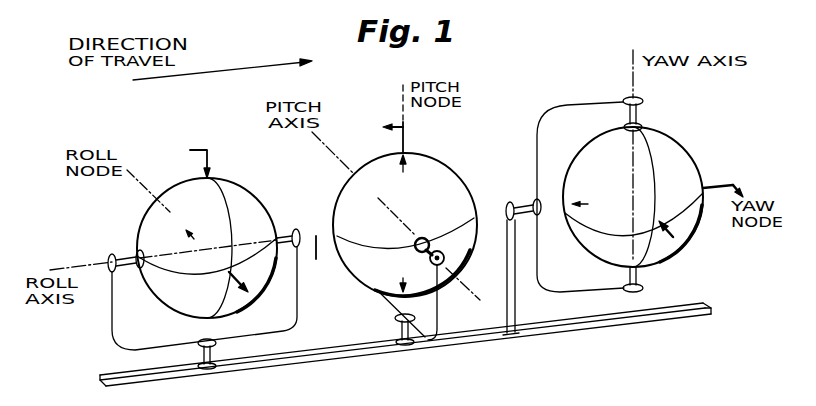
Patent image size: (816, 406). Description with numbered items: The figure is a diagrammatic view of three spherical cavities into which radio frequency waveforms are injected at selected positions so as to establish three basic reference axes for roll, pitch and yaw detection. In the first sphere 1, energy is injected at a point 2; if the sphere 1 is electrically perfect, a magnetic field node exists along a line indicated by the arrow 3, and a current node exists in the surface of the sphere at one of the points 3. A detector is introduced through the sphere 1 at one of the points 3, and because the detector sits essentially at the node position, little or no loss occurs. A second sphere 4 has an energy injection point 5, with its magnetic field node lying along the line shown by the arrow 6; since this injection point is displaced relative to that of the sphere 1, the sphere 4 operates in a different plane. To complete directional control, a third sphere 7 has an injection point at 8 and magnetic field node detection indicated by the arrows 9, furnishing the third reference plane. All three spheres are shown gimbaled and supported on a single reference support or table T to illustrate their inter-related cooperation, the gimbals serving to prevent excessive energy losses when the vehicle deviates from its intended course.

The sphere 1 is at (450, 177).
The injection point 2 is at (331, 233).
The node points 3 is at (403, 288).
The sphere 4 is at (251, 199).
The energy injection point 5 is at (206, 160).
The arrow 6 is at (228, 271).
The sphere 7 is at (671, 138).
The injection point 8 is at (676, 237).
The arrows 9 is at (698, 189).
The reference support or table T is at (350, 349).